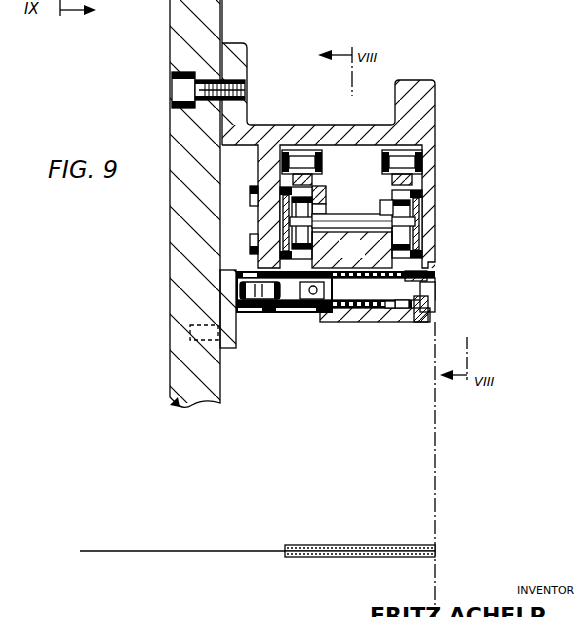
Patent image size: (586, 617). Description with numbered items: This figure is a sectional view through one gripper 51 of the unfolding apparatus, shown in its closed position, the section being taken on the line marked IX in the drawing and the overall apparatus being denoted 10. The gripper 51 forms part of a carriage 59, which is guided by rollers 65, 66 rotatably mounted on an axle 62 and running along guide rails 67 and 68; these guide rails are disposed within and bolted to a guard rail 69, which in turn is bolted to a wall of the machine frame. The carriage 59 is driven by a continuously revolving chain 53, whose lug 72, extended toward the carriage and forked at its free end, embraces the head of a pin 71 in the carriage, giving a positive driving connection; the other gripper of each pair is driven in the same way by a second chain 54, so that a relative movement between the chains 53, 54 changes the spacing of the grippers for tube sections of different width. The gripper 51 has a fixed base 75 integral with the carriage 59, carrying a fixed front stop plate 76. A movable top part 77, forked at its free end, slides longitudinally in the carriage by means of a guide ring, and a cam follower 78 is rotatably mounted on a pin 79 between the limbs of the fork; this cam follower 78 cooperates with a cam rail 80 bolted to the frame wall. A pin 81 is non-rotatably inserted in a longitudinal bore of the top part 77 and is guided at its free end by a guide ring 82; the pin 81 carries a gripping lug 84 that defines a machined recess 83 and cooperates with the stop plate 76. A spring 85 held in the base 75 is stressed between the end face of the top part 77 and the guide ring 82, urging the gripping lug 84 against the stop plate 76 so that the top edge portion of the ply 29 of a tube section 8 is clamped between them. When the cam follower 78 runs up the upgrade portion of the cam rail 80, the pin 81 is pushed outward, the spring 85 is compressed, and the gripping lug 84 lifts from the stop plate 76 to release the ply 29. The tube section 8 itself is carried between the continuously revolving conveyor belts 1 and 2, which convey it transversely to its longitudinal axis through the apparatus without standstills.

The wall 10 is at (215, 16).
The guard rail 69 is at (425, 100).
The chain 53 is at (297, 148).
The chain 54 is at (418, 163).
The lug 72 is at (318, 183).
The pin 71 is at (330, 200).
The guide rail 68 is at (281, 190).
The roller 66 is at (280, 245).
The roller 65 is at (425, 197).
The axle 62 is at (395, 213).
The carriage 59 is at (364, 259).
The guide rail 67 is at (428, 248).
The cam rail 80 is at (228, 290).
The cam follower 78 is at (240, 298).
The guide ring 82 is at (425, 280).
The gripping lug 84 is at (436, 295).
The front stop plate 76 is at (440, 310).
The pin 79 is at (253, 315).
The top part 77 is at (283, 310).
The gripper 51 is at (308, 305).
The spring 85 is at (348, 310).
The base 75 is at (378, 305).
The pin 81 is at (386, 310).
The machined recess 83 is at (421, 310).
The ply 29 is at (432, 444).
The tube section 8 is at (200, 550).
The conveyor belt 1 is at (300, 545).
The conveyor belt 2 is at (305, 558).